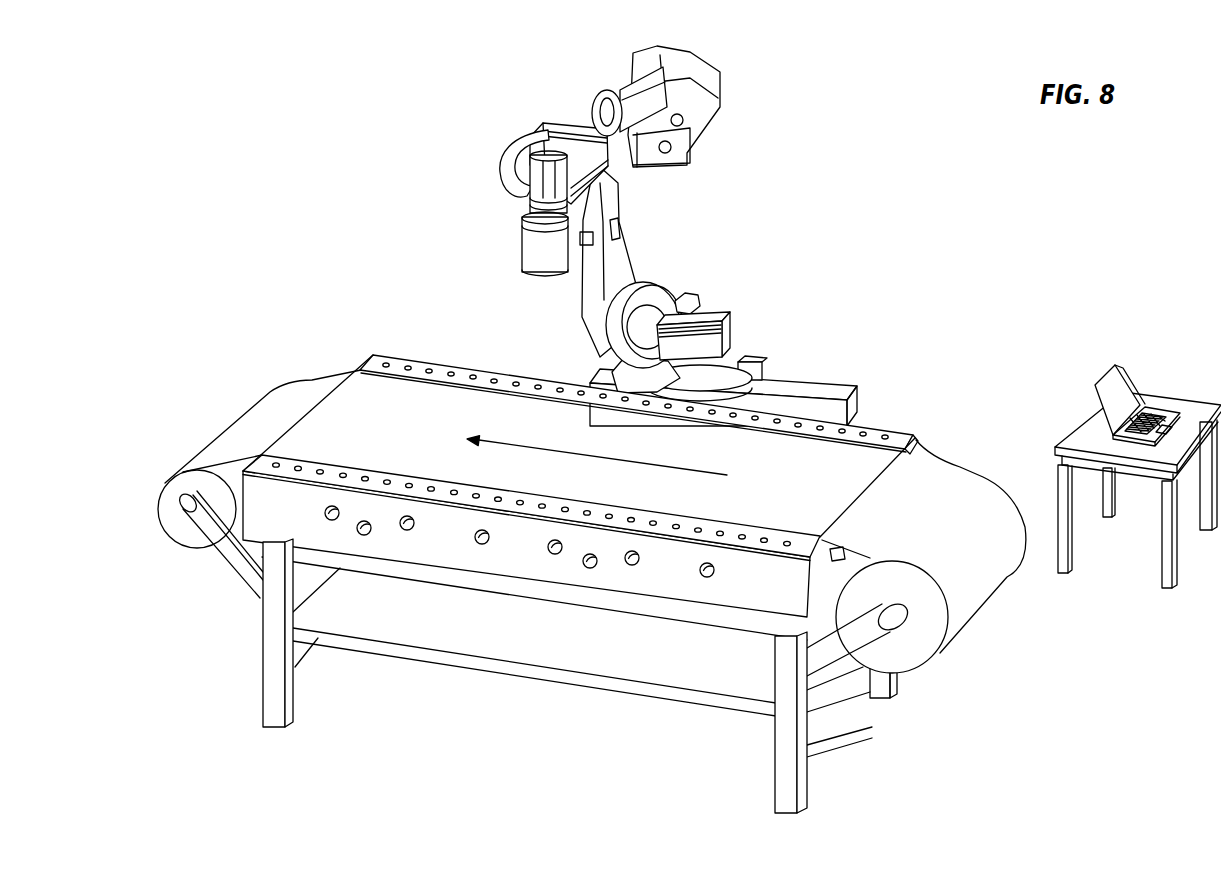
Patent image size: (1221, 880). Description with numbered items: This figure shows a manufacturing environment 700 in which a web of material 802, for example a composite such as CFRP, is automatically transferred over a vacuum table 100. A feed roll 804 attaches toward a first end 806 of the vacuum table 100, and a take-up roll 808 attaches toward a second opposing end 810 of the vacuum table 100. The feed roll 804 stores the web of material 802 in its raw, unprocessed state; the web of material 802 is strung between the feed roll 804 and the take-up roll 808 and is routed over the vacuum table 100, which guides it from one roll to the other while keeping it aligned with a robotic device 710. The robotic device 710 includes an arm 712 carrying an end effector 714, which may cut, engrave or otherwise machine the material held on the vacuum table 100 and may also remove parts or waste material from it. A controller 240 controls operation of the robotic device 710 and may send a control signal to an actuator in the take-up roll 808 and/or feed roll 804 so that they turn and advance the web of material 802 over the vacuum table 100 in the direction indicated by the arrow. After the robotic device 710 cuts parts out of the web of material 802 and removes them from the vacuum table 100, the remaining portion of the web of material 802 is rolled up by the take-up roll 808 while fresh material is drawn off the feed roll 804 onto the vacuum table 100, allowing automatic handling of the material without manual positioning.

The manufacturing environment 700 is at (1042, 206).
The robotic device 710 is at (697, 236).
The arm 712 is at (564, 123).
The end effector 714 is at (533, 258).
The second opposing end 810 is at (362, 361).
The web of material 802 is at (850, 455).
The first end 806 is at (932, 444).
The feed roll 804 is at (922, 653).
The take-up roll 808 is at (171, 522).
The vacuum table 100 is at (257, 527).
The controller 240 is at (1170, 412).